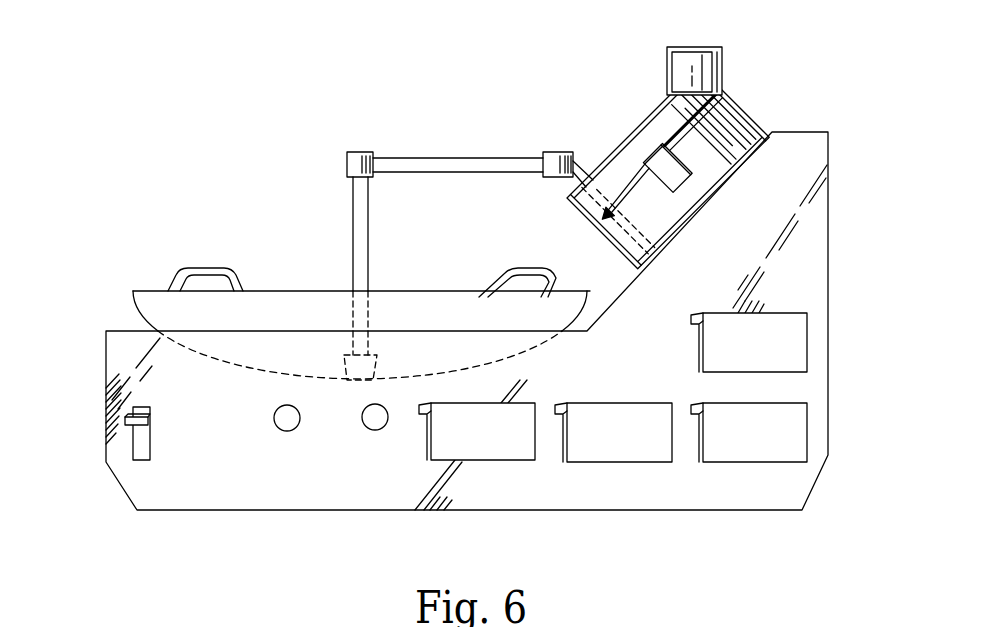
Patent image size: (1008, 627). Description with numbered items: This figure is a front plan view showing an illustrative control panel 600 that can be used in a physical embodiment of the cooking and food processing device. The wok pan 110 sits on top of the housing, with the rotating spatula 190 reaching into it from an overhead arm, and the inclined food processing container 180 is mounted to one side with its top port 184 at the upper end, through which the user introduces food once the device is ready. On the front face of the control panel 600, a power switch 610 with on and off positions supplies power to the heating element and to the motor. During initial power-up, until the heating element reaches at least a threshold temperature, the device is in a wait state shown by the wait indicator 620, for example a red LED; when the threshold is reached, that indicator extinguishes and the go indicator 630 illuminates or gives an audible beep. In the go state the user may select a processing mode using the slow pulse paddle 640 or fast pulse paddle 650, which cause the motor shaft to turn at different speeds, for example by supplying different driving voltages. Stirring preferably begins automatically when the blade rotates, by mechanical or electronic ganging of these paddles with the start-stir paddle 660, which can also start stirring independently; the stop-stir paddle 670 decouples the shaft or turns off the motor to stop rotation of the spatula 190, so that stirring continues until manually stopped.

The wok pan 110 is at (162, 291).
The container 180 is at (734, 111).
The top port 184 is at (697, 47).
The spatula 190 is at (416, 357).
The control panel 600 is at (116, 367).
The power switch 610 is at (133, 450).
The wait indicator 620 is at (274, 425).
The go indicator 630 is at (365, 426).
The slow paddle control 640 is at (463, 460).
The fast paddle control 650 is at (607, 462).
The start-stir paddle 660 is at (763, 462).
The stop-stir paddle 670 is at (807, 340).